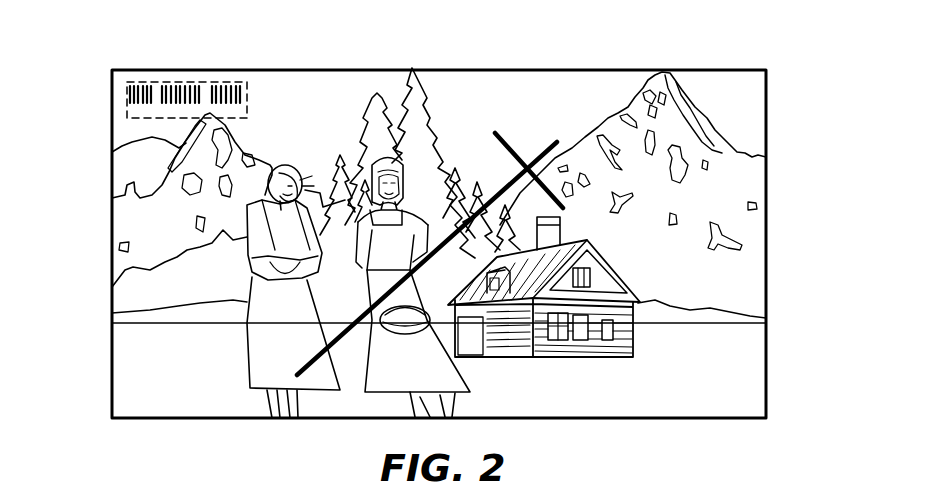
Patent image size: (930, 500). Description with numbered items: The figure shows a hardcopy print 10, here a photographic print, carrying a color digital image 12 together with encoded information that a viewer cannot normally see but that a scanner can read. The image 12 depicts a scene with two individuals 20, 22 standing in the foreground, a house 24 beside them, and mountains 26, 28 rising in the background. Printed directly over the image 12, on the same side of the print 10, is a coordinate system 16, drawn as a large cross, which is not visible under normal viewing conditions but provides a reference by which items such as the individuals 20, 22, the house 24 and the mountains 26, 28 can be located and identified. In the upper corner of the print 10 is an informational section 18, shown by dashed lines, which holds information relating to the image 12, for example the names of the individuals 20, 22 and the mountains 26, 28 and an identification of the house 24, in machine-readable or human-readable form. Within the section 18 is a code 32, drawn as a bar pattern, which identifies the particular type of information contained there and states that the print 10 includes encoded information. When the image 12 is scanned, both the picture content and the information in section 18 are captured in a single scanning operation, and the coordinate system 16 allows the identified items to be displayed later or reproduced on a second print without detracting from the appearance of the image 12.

The hardcopy print 10 is at (781, 163).
The digital image 12 is at (748, 268).
The coordinate system 16 is at (508, 135).
The section 18 is at (112, 112).
The individual 20 is at (387, 155).
The individual 22 is at (283, 164).
The house 24 is at (593, 358).
The mountain 26 is at (128, 148).
The mountain 28 is at (645, 95).
The code 32 is at (177, 84).